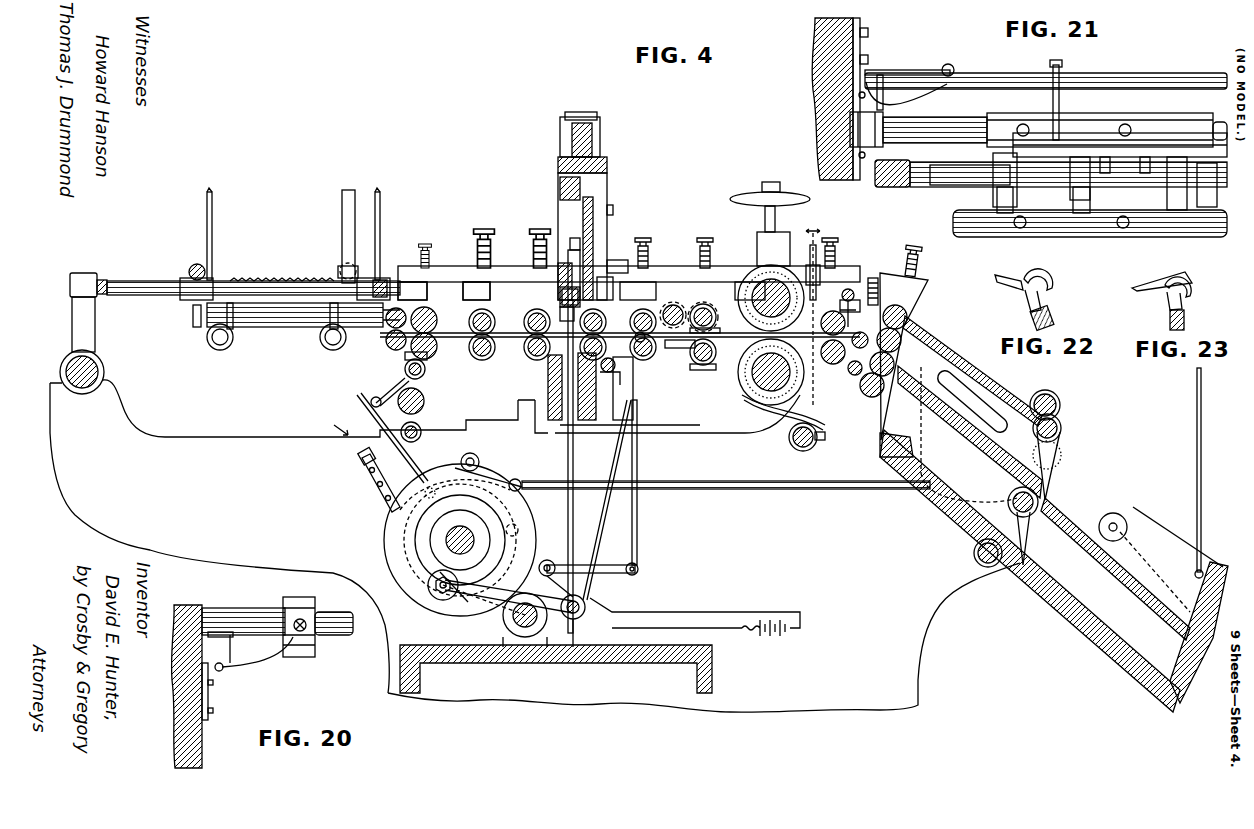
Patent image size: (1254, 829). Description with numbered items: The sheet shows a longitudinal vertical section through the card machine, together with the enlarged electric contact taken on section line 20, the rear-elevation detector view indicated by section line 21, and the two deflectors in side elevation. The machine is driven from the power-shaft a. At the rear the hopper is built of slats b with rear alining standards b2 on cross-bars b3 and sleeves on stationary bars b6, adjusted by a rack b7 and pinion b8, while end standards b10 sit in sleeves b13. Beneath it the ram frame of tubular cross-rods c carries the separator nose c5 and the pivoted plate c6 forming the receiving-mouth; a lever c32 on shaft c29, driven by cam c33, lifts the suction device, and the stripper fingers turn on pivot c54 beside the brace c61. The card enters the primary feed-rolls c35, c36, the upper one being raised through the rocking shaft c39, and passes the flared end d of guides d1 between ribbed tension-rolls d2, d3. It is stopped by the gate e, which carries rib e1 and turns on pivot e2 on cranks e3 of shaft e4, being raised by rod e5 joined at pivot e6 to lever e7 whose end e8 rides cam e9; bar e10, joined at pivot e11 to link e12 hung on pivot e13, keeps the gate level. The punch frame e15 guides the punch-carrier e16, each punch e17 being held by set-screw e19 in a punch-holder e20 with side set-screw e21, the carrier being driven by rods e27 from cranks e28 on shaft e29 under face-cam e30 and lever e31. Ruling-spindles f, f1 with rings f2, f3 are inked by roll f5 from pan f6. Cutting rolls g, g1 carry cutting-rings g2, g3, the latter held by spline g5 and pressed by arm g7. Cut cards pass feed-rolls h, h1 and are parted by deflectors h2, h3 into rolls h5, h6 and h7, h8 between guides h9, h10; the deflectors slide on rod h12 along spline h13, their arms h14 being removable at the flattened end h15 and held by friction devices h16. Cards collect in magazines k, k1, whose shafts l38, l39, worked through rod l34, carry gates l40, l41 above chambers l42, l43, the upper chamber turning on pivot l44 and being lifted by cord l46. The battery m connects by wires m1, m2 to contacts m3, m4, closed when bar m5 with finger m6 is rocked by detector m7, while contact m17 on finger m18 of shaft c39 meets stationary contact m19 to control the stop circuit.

In FIG. 4, the power-shaft a is at (450, 545).
In FIG. 4, the slats b is at (290, 314).
In FIG. 4, the side alining fingers or standards b2 is at (214, 228).
In FIG. 4, the cross-bars b3 is at (386, 278).
In FIG. 4, the stationary tubes or bars b6 is at (146, 285).
In FIG. 4, the rack b7 is at (250, 283).
In FIG. 4, the pinion b8 is at (195, 265).
In FIG. 4, the end guides or standards b10 is at (343, 213).
In FIG. 4, the sleeves b13 is at (340, 272).
In FIG. 4, the cross-rods c is at (216, 347).
In FIG. 4, the nose or separator c5 is at (415, 308).
In FIG. 4, the plate c6 is at (390, 341).
In FIG. 4, the shaft c29 is at (405, 369).
In FIG. 4, the lever c32 is at (399, 381).
In FIG. 4, the cam c33 is at (414, 527).
In FIG. 4, the upper feed-roll c35 is at (448, 284).
In FIG. 4, the feed-roll c36 is at (410, 354).
In FIG. 4, the shaft c39 is at (421, 430).
In FIG. 20, the shaft c39 is at (339, 616).
In FIG. 4, the pivot c54 is at (418, 466).
In FIG. 4, the tie rod or brace c61 is at (424, 399).
In FIG. 4, the flared open end d is at (484, 337).
In FIG. 4, the guides d1 is at (468, 350).
In FIG. 4, the tension-roll d2 is at (524, 352).
In FIG. 4, the tension-roll d3 is at (490, 300).
In FIG. 4, the gate e is at (620, 327).
In FIG. 4, the rib e1 is at (638, 335).
In FIG. 4, the pivot e2 is at (616, 365).
In FIG. 4, the cranks e3 is at (618, 385).
In FIG. 4, the shaft e4 is at (622, 379).
In FIG. 4, the rod e5 is at (592, 521).
In FIG. 4, the pivot e6 is at (579, 617).
In FIG. 4, the lever e7 is at (550, 630).
In FIG. 4, the free end e8 is at (468, 604).
In FIG. 4, the cam e9 is at (482, 495).
In FIG. 4, the bar e10 is at (640, 403).
In FIG. 4, the pivot e11 is at (638, 570).
In FIG. 4, the link e12 is at (598, 566).
In FIG. 4, the pivot e13 is at (548, 561).
In FIG. 4, the frame e15 is at (594, 147).
In FIG. 4, the punch-carrier e16 is at (594, 207).
In FIG. 4, the punch e17 is at (559, 312).
In FIG. 4, the set-screw e19 is at (573, 247).
In FIG. 4, the punch-holder e20 is at (562, 292).
In FIG. 4, the side set-screw e21 is at (599, 311).
In FIG. 4, the rods e27 is at (574, 470).
In FIG. 4, the cranks e28 is at (560, 612).
In FIG. 4, the shaft e29 is at (527, 628).
In FIG. 4, the face-cam e30 is at (417, 567).
In FIG. 4, the lever e31 is at (496, 600).
In FIG. 4, the principal ruling-spindle f is at (714, 330).
In FIG. 4, the lower spindle f1 is at (690, 355).
In FIG. 4, the rings f2 is at (712, 310).
In FIG. 4, the rings f3 is at (705, 370).
In FIG. 4, the inking-roll f5 is at (678, 305).
In FIG. 4, the pan f6 is at (683, 345).
In FIG. 4, the upper roll g is at (751, 290).
In FIG. 4, the lower roll g1 is at (758, 358).
In FIG. 4, the cutting-rings g2 is at (762, 277).
In FIG. 4, the cutting-rings g3 is at (758, 379).
In FIG. 4, the spline g5 is at (782, 355).
In FIG. 4, the arm g7 is at (788, 400).
In FIG. 4, the feed-roll h is at (882, 284).
In FIG. 4, the feed-roll h1 is at (836, 364).
In FIG. 21, the deflector h2 is at (1068, 200).
In FIG. 22, the deflector h2 is at (1008, 279).
In FIG. 21, the deflector h3 is at (1165, 200).
In FIG. 4, the feed-roll h5 is at (873, 397).
In FIG. 4, the feed-roll h6 is at (895, 365).
In FIG. 4, the roll h7 is at (907, 315).
In FIG. 4, the roll h8 is at (901, 340).
In FIG. 4, the guides h9 is at (858, 374).
In FIG. 23, the guides h9 is at (1150, 288).
In FIG. 4, the guides h10 is at (874, 288).
In FIG. 21, the fixed rod h12 is at (935, 186).
In FIG. 21, the spline h13 is at (960, 177).
In FIG. 22, the arms h14 is at (1052, 282).
In FIG. 23, the arms h14 is at (1192, 284).
In FIG. 21, the flattened portion h15 is at (892, 188).
In FIG. 22, the spring-pressed friction devices h16 is at (1050, 306).
In FIG. 23, the spring-pressed friction devices h16 is at (1186, 306).
In FIG. 4, the magazine k is at (946, 497).
In FIG. 4, the magazine k1 is at (956, 407).
In FIG. 4, the rod l34 is at (738, 492).
In FIG. 4, the shaft l38 is at (1061, 411).
In FIG. 4, the shaft l39 is at (1016, 508).
In FIG. 4, the gate l40 is at (1055, 462).
In FIG. 4, the gate l41 is at (1031, 553).
In FIG. 4, the receiving-chamber l42 is at (1150, 535).
In FIG. 4, the receiving-chamber l43 is at (1135, 622).
In FIG. 4, the pivot l44 is at (1118, 522).
In FIG. 4, the cord or pulley l46 is at (1203, 464).
In FIG. 4, the battery m is at (771, 637).
In FIG. 4, the connection m1 is at (697, 634).
In FIG. 21, the connection m1 is at (857, 185).
In FIG. 4, the connection m2 is at (700, 437).
In FIG. 21, the connection m2 is at (879, 182).
In FIG. 21, the make-and-break contact m3 is at (907, 76).
In FIG. 21, the make-and-break contact m4 is at (928, 92).
In FIG. 4, the bar m5 is at (852, 288).
In FIG. 21, the bar m5 is at (1017, 78).
In FIG. 4, the finger m6 is at (809, 262).
In FIG. 21, the finger m6 is at (952, 66).
In FIG. 21, the detector m7 is at (1163, 138).
In FIG. 4, the contact m17 is at (361, 455).
In FIG. 20, the contact m17 is at (296, 620).
In FIG. 4, the finger m18 is at (382, 448).
In FIG. 4, the contact m19 is at (370, 480).
In FIG. 20, the contact m19 is at (263, 664).
In FIG. 4, the section line 20 is at (338, 423).
In FIG. 4, the section line 21 is at (812, 315).